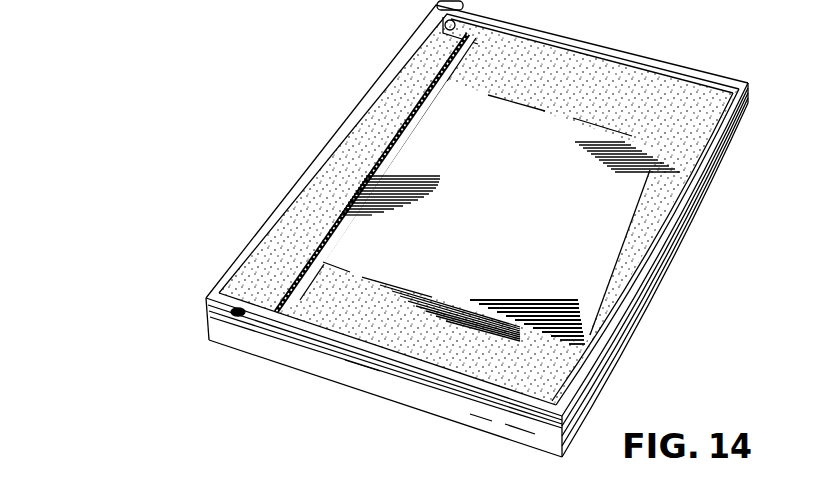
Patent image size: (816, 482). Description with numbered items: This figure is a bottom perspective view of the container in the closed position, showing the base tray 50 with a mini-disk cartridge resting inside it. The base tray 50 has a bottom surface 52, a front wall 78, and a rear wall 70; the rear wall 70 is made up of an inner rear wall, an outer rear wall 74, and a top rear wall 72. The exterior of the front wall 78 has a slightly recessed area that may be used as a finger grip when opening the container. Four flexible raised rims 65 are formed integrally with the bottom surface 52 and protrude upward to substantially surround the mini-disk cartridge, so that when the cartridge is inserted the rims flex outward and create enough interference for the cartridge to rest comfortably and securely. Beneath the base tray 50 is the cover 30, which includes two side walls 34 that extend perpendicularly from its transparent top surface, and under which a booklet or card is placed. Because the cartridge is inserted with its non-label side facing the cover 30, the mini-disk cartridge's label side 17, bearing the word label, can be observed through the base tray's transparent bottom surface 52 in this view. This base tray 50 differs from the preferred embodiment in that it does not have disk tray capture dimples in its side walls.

The base tray 50 is at (347, 103).
The label side 17 is at (634, 203).
The side wall 34 is at (428, 406).
The cover 30 is at (289, 362).
The front wall 78 is at (670, 244).
The rear wall 70 is at (336, 158).
The outer rear wall 74 is at (307, 188).
The top rear wall 72 is at (292, 250).
The bottom surface 52 is at (524, 224).
The raised rims 65 is at (398, 163).